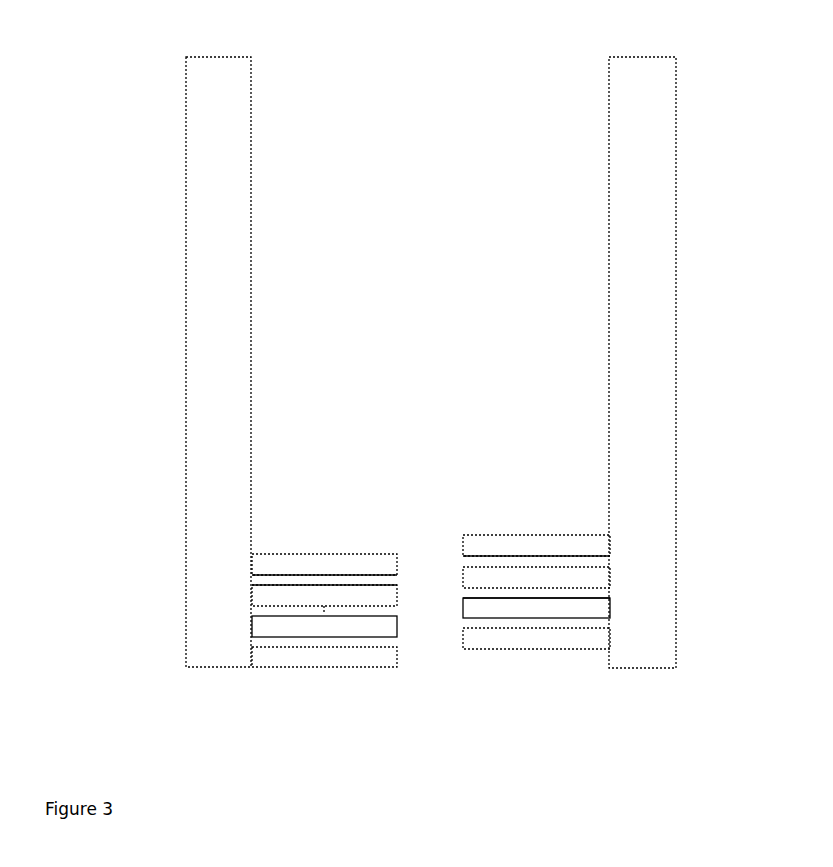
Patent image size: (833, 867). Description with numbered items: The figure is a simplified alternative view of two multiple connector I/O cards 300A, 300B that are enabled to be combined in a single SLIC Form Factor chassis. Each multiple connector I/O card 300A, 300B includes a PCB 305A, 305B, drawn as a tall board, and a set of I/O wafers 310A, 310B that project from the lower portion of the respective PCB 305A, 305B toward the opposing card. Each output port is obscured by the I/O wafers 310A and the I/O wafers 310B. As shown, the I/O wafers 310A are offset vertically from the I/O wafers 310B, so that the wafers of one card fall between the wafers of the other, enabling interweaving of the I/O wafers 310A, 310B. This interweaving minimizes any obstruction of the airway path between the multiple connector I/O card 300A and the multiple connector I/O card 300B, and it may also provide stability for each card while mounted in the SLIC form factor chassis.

The multiple connector I/O card 300A is at (146, 110).
The multiple connector I/O card 300B is at (570, 90).
The PCB 305A is at (218, 363).
The PCB 305B is at (655, 330).
The I/O wafers 310A is at (274, 567).
The I/O wafers 310B is at (568, 575).